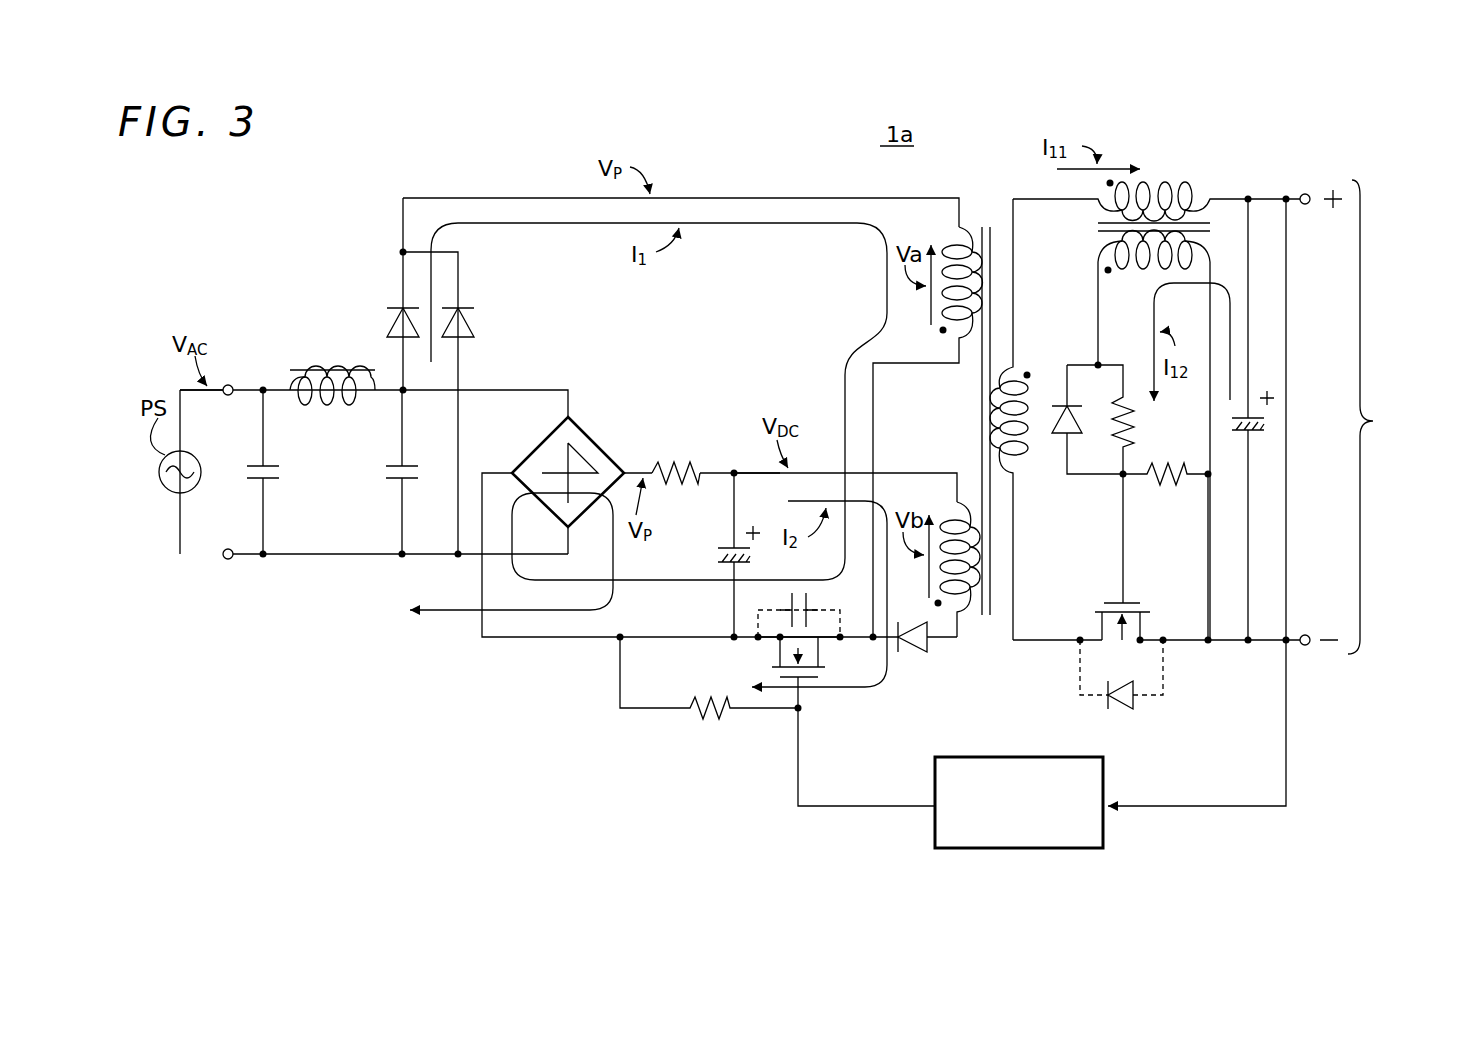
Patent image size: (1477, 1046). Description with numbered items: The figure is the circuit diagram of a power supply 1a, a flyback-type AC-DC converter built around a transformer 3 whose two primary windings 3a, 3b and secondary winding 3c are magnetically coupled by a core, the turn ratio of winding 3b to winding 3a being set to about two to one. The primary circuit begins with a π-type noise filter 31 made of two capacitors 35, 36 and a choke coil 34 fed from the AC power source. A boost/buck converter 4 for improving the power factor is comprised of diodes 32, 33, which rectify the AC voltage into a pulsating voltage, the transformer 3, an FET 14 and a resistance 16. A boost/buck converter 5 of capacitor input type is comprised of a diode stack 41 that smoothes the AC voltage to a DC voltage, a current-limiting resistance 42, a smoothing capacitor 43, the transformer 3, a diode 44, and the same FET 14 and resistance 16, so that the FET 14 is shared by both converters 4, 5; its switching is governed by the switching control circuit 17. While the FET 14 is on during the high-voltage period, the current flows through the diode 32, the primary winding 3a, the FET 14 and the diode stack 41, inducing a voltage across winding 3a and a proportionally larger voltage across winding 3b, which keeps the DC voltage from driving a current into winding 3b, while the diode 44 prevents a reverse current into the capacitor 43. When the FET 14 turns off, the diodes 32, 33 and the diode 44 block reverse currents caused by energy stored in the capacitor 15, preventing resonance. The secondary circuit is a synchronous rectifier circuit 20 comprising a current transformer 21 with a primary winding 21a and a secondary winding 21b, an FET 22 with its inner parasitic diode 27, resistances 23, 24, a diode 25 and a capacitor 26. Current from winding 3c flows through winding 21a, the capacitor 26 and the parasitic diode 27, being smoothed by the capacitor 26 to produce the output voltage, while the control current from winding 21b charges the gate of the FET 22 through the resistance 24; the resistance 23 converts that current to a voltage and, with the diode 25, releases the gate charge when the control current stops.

The power supply 1a is at (899, 134).
The transformer 3 is at (968, 401).
The primary winding 3a is at (953, 320).
The primary winding 3b is at (960, 500).
The secondary winding 3c is at (1016, 455).
The boost/buck converter 4 is at (748, 180).
The boost/buck converter 5 is at (733, 403).
The FET 14 is at (785, 679).
The capacitor 15 is at (812, 605).
The resistance 16 is at (716, 718).
The switching control circuit 17 is at (1053, 757).
The synchronous rectifier circuit 20 is at (1292, 178).
The current transformer 21 is at (1159, 396).
The primary winding 21a is at (1097, 205).
The secondary winding 21b is at (1098, 246).
The FET 22 is at (1130, 602).
The resistance 23 is at (1149, 474).
The resistance 24 is at (1116, 415).
The diode 25 is at (1078, 428).
The capacitor 26 is at (1244, 432).
The inner parasitic diode 27 is at (1120, 706).
The π-type noise filter 31 is at (332, 438).
The diode 32 is at (388, 320).
The diode 33 is at (470, 326).
The choke coil 34 is at (332, 405).
The capacitor 35 is at (272, 482).
The capacitor 36 is at (393, 482).
The diode stack 41 is at (606, 442).
The current-limiting resistance 42 is at (684, 463).
The smoothing capacitor 43 is at (729, 548).
The diode 44 is at (917, 627).